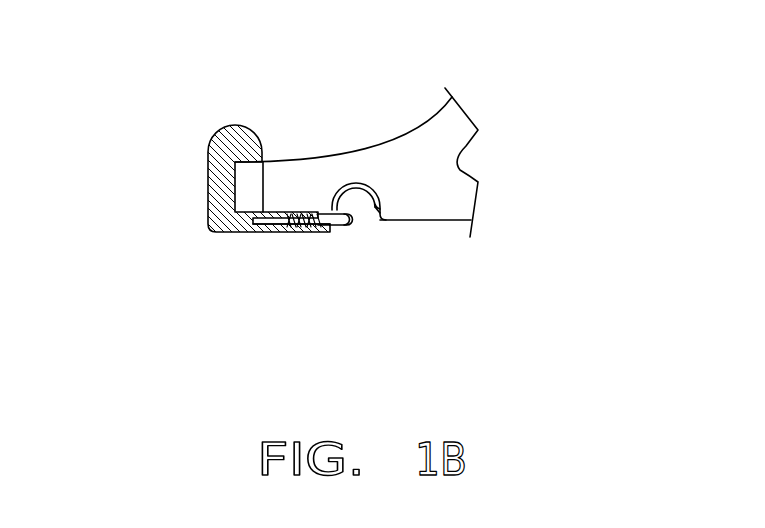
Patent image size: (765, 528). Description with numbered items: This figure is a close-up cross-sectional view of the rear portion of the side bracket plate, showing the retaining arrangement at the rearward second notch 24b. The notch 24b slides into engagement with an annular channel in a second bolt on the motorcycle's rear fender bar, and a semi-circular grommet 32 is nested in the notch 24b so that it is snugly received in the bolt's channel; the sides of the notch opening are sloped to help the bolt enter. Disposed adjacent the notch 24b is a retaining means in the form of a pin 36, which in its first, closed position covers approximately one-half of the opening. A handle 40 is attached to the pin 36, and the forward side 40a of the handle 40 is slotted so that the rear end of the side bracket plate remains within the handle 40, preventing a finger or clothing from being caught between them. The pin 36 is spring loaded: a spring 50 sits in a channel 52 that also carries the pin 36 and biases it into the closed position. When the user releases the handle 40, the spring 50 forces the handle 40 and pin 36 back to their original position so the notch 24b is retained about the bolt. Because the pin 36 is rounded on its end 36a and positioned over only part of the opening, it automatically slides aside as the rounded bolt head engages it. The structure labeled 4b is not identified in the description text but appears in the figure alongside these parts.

The handle 40 is at (214, 135).
The forward side of the handle 40a is at (304, 120).
The housing wall 4b is at (422, 162).
The semi-circular grommet 32 is at (383, 119).
The spring 50 is at (236, 287).
The channel 52 is at (268, 304).
The pin 36 is at (326, 304).
The rounded end of the pin 36a is at (386, 306).
The rearward second notch 24b is at (415, 281).